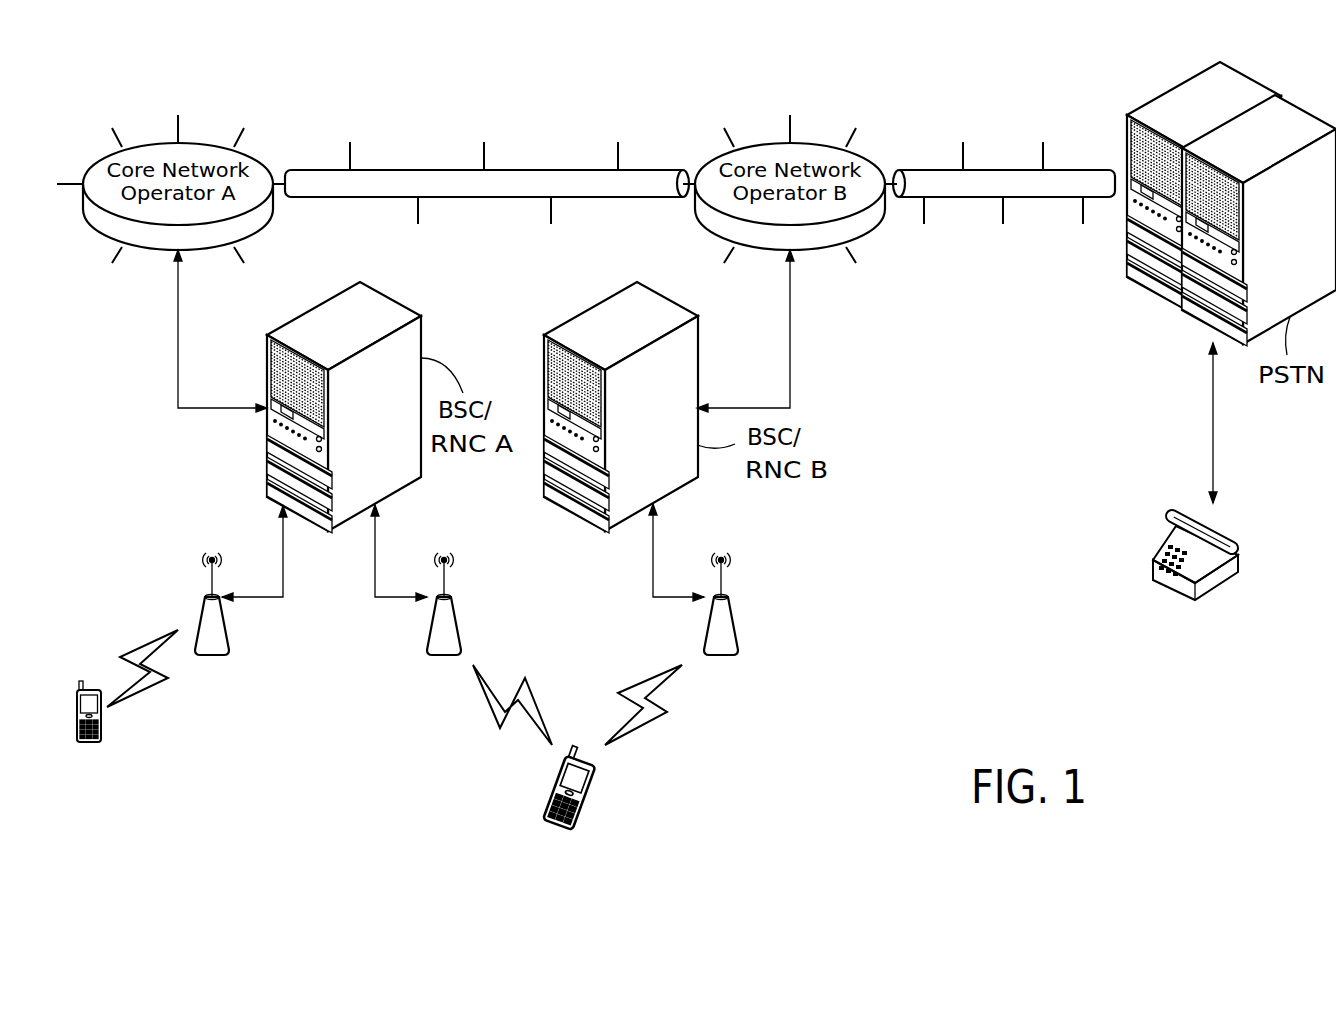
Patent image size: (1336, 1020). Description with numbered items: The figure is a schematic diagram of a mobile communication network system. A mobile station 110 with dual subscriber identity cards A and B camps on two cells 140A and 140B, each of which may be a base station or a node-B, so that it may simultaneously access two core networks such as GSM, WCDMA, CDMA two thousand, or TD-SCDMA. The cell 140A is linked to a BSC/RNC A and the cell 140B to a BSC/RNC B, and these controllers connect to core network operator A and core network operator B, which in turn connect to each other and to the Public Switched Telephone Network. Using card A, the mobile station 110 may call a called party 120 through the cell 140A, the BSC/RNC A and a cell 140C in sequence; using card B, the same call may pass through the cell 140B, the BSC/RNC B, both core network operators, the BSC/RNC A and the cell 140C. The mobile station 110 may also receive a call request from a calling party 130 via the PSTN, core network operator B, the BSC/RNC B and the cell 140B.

The mobile station 110 is at (593, 789).
The called party 120 is at (100, 728).
The called party 130 is at (1238, 565).
The cell 140A is at (460, 623).
The cell 140B is at (738, 623).
The cell 140C is at (230, 623).